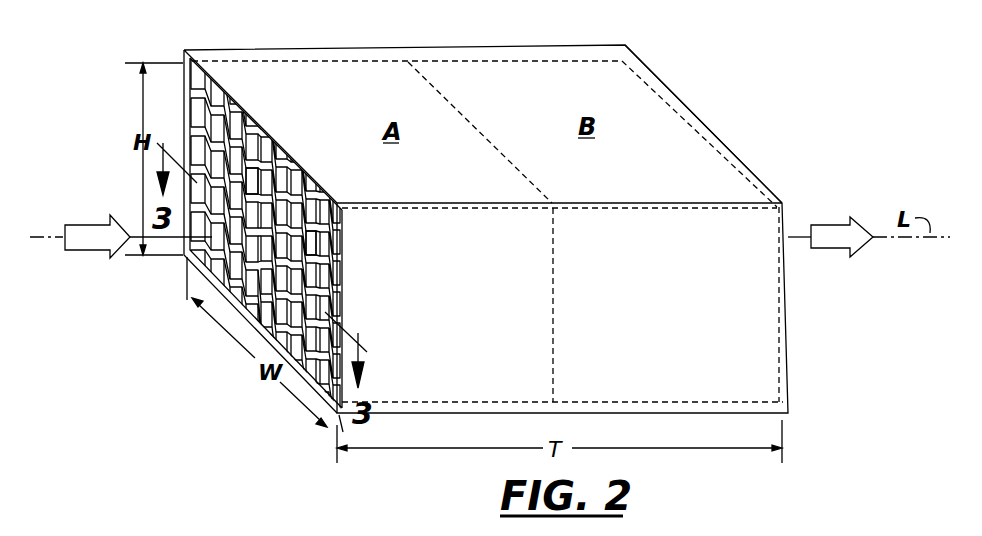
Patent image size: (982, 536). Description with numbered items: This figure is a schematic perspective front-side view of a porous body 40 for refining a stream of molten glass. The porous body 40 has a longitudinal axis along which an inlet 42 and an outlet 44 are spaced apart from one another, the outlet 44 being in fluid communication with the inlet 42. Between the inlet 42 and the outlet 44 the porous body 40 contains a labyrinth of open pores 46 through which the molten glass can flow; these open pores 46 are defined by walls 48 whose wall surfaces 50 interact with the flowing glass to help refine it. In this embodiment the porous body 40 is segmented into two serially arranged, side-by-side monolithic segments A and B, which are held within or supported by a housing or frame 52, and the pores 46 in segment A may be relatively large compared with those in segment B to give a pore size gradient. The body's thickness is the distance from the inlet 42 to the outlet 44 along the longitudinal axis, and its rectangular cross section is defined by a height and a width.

The porous body 40 is at (345, 65).
The inlet 42 is at (183, 92).
The outlet 44 is at (668, 95).
The open pores 46 is at (265, 205).
The walls 48 is at (297, 203).
The wall surfaces 50 is at (223, 150).
The housing or frame 52 is at (500, 48).